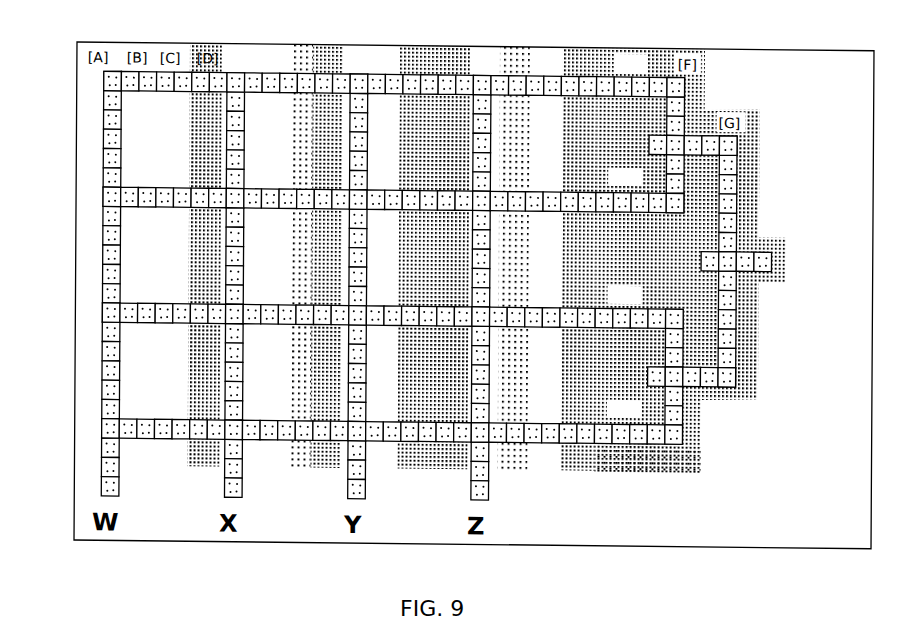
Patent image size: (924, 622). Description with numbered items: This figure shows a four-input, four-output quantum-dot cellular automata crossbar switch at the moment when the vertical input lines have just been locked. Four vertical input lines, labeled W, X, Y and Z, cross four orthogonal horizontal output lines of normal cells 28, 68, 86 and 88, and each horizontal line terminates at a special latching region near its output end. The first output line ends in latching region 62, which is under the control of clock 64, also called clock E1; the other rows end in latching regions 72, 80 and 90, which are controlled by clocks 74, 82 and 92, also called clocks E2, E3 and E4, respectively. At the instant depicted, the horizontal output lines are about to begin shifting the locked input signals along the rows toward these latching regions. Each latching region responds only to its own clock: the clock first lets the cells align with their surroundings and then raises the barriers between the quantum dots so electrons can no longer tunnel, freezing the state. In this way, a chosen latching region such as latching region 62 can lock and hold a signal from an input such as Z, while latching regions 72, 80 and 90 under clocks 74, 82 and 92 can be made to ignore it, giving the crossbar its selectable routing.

The line of normal cells 88 is at (113, 80).
The line of normal cells 86 is at (113, 194).
The line of normal cells 68 is at (113, 308).
The line of normal cells 28 is at (100, 428).
The latching region 62 is at (603, 57).
The clock 64 is at (638, 57).
The clock 74 is at (613, 173).
The latching region 72 is at (623, 223).
The clock 82 is at (625, 290).
The latching region 80 is at (605, 344).
The clock 92 is at (597, 393).
The latching region 90 is at (635, 445).